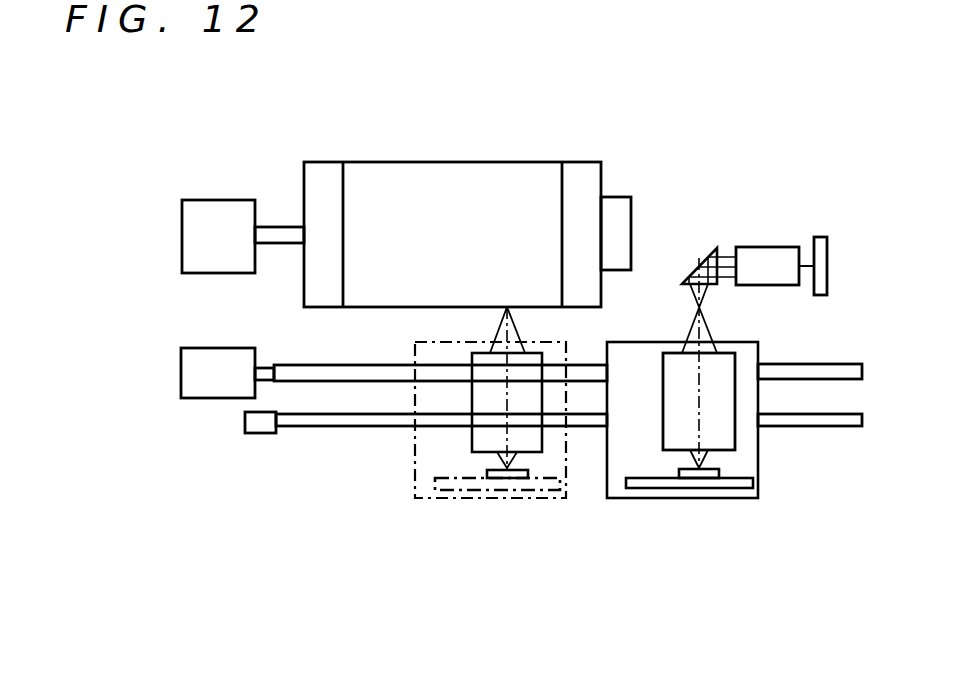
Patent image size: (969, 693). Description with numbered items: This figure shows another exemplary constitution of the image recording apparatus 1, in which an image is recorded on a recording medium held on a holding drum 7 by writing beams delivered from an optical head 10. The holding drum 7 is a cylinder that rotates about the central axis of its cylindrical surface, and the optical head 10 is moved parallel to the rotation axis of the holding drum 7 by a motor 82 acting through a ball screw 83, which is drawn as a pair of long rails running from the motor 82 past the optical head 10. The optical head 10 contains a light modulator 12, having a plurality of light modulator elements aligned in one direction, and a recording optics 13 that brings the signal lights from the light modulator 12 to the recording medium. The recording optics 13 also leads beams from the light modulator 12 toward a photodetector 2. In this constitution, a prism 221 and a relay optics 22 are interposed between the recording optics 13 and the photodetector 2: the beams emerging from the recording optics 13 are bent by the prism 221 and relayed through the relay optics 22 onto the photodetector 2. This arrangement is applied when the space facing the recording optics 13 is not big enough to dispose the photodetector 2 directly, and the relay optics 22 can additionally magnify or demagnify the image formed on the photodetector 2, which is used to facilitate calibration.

The image recording apparatus 1 is at (203, 128).
The holding drum 7 is at (579, 162).
The motor 82 is at (198, 348).
The ball screw 83 is at (347, 365).
The optical head 10 is at (415, 477).
The light modulator 12 is at (688, 468).
The recording optics 13 is at (737, 367).
The prism 221 is at (700, 267).
The relay optics 22 is at (767, 247).
The photodetector 2 is at (822, 237).